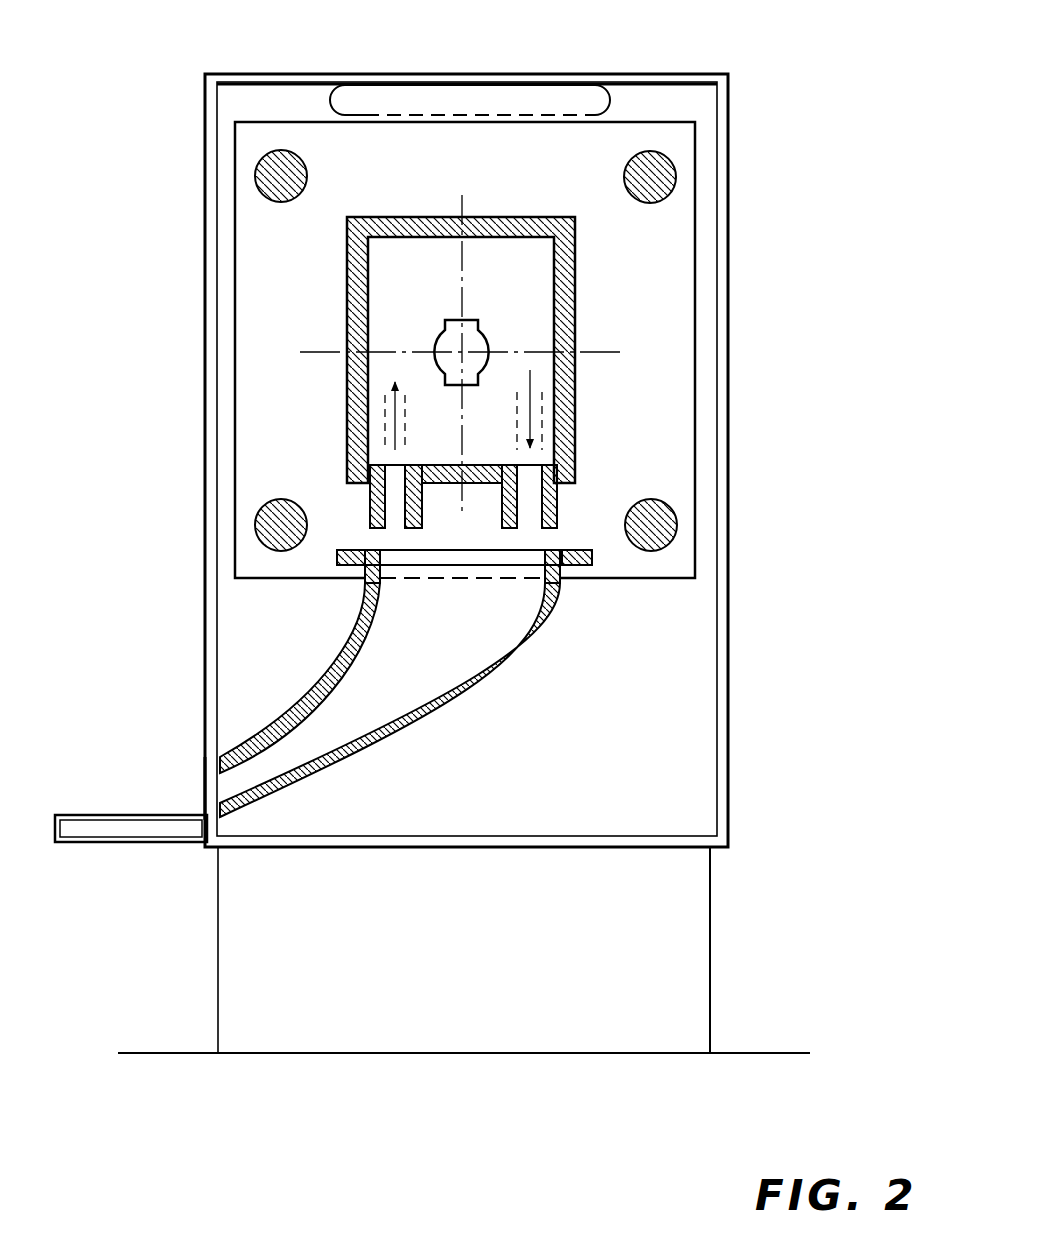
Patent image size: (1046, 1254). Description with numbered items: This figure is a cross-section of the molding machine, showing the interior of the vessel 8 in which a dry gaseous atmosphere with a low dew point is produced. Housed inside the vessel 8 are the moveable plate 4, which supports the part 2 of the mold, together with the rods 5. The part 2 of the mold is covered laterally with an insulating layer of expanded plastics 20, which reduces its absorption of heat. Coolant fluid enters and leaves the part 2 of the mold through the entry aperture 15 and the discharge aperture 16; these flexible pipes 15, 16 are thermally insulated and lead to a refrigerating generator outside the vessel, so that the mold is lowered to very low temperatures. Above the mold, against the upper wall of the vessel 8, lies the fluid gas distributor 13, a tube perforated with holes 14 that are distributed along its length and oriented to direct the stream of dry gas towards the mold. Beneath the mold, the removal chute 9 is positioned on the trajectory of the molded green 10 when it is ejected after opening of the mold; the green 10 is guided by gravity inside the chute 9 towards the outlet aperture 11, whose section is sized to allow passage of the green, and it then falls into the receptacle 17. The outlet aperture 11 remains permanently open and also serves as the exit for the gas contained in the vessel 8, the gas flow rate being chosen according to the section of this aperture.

The part of the mold 2 is at (532, 273).
The moveable plate 4 is at (684, 116).
The rods 5 is at (306, 158).
The vessel 8 is at (731, 662).
The removal chute 9 is at (507, 666).
The molded green 10 is at (491, 347).
The outlet aperture 11 is at (206, 790).
The fluid gas distributor 13 is at (478, 107).
The holes 14 is at (352, 108).
The entry aperture (flexible pipe) 15 is at (358, 490).
The discharge aperture (flexible pipe) 16 is at (558, 490).
The receptacle 17 is at (95, 846).
The insulating layer of expanded plastics 20 is at (518, 214).